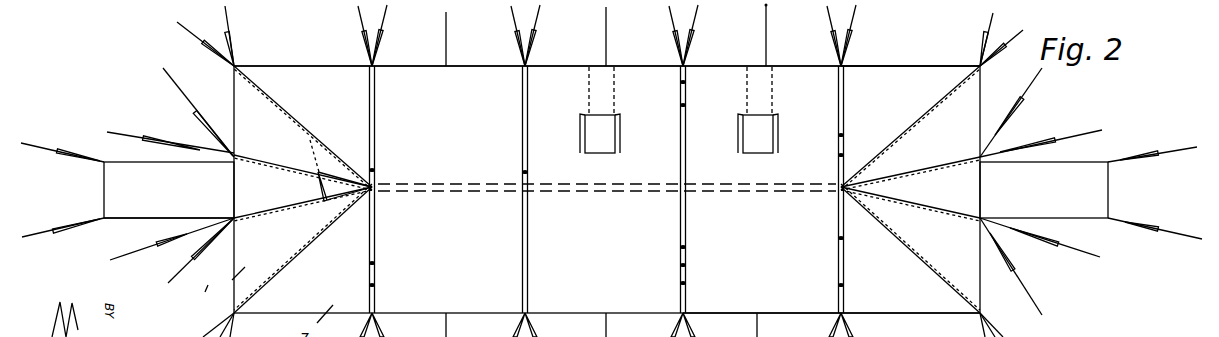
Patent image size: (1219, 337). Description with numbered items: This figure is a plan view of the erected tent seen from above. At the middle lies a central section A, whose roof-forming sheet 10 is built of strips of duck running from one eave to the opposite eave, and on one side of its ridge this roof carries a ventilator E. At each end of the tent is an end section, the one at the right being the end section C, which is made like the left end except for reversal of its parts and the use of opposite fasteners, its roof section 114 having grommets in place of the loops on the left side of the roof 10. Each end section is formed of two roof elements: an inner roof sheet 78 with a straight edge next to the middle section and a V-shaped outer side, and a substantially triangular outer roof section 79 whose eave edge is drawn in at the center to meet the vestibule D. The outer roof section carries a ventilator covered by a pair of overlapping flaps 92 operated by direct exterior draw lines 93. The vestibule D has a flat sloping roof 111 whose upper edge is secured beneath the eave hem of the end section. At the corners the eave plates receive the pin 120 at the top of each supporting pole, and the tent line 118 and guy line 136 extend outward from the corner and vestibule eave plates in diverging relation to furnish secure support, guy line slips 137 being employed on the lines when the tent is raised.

The roof-forming sheet 10 is at (412, 73).
The roof section 114 is at (877, 80).
The inner roof sheet 78 is at (303, 128).
The outer roof section 79 is at (303, 163).
The pin 120 is at (238, 309).
The overlapping flaps 92 is at (368, 196).
The exterior draw lines 93 is at (313, 210).
The flat sloping roof 111 is at (133, 207).
The guy line 136 is at (167, 244).
The tent line 118 is at (197, 336).
The guy line slips 137 is at (548, 325).
The vestibule D is at (1120, 188).
The ventilator E is at (608, 141).
The central section A is at (735, 297).
The right end section C is at (902, 300).